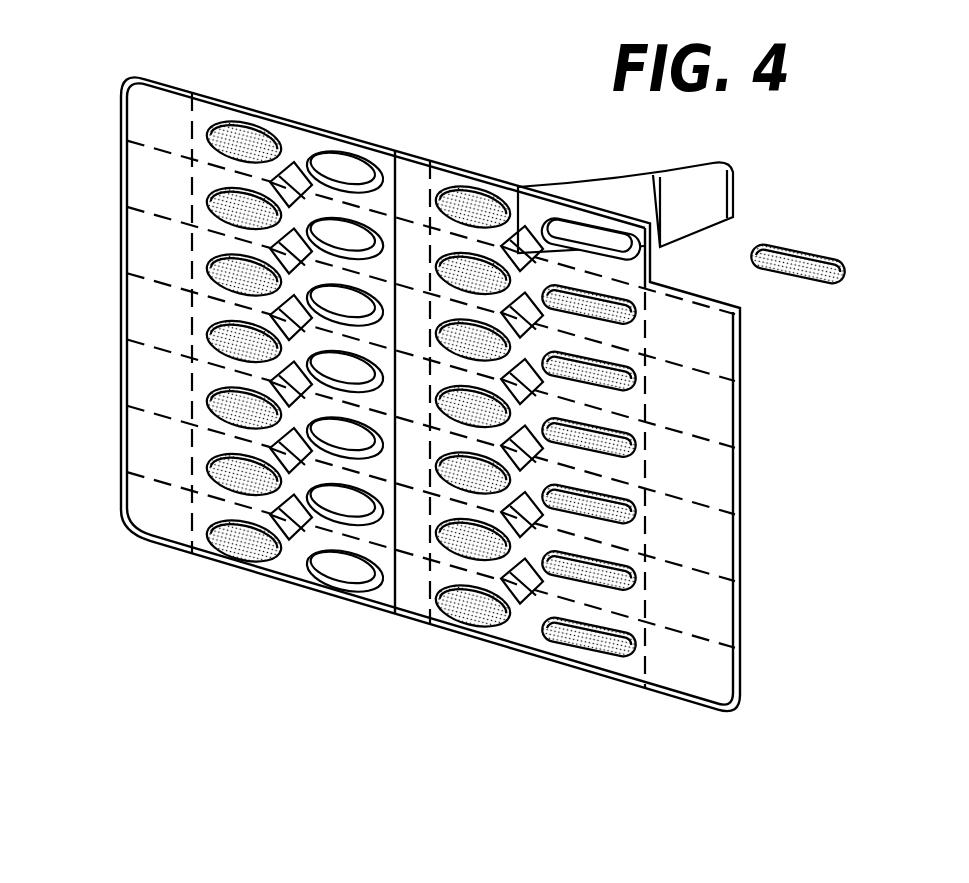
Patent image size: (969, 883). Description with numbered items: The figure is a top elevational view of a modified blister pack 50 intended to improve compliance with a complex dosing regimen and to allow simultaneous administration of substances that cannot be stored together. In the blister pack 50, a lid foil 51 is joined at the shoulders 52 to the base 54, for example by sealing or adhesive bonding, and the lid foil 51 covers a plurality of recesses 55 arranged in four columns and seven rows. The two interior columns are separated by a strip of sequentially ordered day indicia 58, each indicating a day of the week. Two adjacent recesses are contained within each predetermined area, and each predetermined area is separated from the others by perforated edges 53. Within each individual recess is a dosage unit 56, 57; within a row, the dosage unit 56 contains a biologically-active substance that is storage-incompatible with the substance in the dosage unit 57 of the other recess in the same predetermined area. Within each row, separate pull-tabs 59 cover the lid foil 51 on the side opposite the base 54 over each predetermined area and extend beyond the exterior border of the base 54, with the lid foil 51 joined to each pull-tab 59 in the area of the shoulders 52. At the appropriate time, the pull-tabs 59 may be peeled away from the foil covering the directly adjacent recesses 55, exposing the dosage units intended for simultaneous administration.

The blister pack 50 is at (653, 279).
The lid foil 51 is at (531, 653).
The shoulders 52 is at (587, 661).
The perforated edges 53 is at (390, 143).
The base 54 is at (490, 644).
The recesses 55 is at (335, 596).
The dosage unit 56 is at (218, 117).
The dosage unit 57 is at (345, 149).
The day indicia 58 is at (413, 156).
The pull-tabs 59 is at (124, 140).